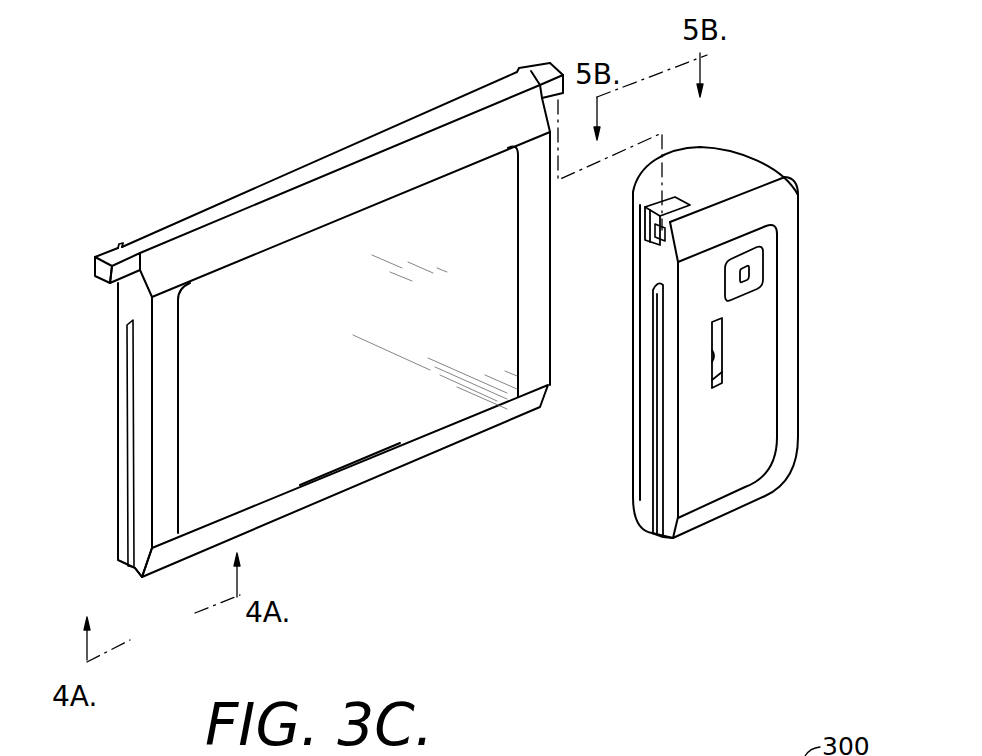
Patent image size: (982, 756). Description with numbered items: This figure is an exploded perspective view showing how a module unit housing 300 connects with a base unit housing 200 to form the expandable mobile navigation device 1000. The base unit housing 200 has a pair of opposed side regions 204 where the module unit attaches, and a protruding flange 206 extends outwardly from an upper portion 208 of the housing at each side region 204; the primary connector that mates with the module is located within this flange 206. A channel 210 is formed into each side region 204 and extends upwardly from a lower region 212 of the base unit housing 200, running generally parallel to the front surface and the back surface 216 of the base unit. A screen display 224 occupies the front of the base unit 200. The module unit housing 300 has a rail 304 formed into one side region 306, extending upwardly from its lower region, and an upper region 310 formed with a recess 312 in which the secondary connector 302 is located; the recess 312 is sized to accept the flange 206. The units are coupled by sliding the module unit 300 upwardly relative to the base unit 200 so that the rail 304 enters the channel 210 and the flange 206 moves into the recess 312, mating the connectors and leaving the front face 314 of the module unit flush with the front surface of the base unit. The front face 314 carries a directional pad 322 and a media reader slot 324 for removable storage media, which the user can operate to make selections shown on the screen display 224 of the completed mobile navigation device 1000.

The base unit housing 200 is at (306, 114).
The side region 204 is at (128, 300).
The protruding flange 206 is at (110, 258).
The upper portion 208 is at (120, 244).
The channel 210 is at (134, 483).
The lower region 212 is at (141, 578).
The back surface 216 is at (117, 393).
The screen display 224 is at (341, 462).
The module unit housing 300 is at (812, 211).
The secondary connector 302 is at (652, 240).
The rail 304 is at (670, 532).
The side region 306 is at (662, 472).
The upper region 310 is at (752, 166).
The recess 312 is at (650, 212).
The front face 314 is at (770, 412).
The directional pad 322 is at (768, 272).
The media reader slot 324 is at (716, 360).
The mobile navigation device 1000 is at (698, 560).